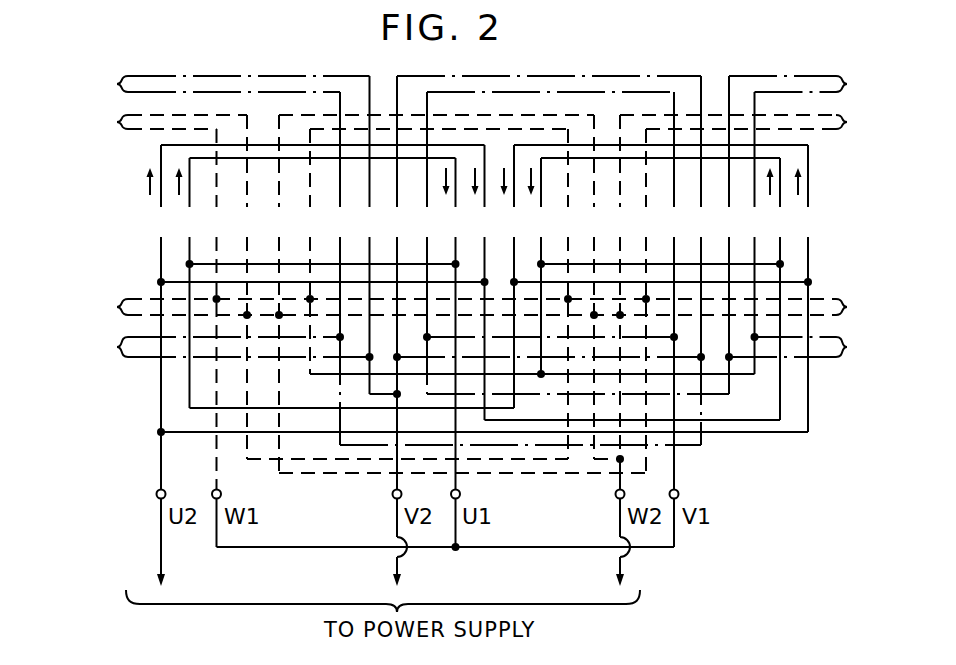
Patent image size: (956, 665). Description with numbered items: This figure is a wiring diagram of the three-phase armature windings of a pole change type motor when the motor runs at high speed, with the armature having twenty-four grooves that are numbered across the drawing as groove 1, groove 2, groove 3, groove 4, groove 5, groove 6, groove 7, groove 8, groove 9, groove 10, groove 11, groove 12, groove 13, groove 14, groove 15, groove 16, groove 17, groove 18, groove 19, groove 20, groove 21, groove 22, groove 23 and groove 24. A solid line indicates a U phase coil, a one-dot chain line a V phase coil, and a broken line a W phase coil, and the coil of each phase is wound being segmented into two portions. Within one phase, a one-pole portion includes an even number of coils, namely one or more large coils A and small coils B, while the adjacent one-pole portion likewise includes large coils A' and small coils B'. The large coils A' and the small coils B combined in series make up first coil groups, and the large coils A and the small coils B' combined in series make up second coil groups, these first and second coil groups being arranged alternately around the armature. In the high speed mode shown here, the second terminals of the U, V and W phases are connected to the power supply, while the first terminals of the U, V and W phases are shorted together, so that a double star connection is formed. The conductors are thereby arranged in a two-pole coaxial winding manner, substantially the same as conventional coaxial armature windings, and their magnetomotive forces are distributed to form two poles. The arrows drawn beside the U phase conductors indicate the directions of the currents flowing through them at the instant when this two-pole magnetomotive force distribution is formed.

The large coil A is at (323, 94).
The small coil B is at (323, 100).
The large coil A' is at (661, 94).
The small coil B' is at (660, 100).
The slot 1 is at (161, 360).
The slot 2 is at (190, 283).
The slot 3 is at (217, 338).
The slot 4 is at (247, 287).
The slot 5 is at (279, 294).
The slot 6 is at (310, 251).
The slot 7 is at (340, 268).
The slot 8 is at (370, 235).
The slot 9 is at (398, 325).
The slot 10 is at (427, 243).
The slot 11 is at (456, 352).
The slot 12 is at (485, 282).
The slot 13 is at (514, 276).
The slot 14 is at (541, 266).
The slot 15 is at (568, 294).
The slot 16 is at (594, 287).
The slot 17 is at (620, 345).
The slot 18 is at (646, 301).
The slot 19 is at (674, 319).
The slot 20 is at (701, 260).
The slot 21 is at (729, 235).
The slot 22 is at (755, 233).
The slot 23 is at (780, 289).
The slot 24 is at (808, 288).